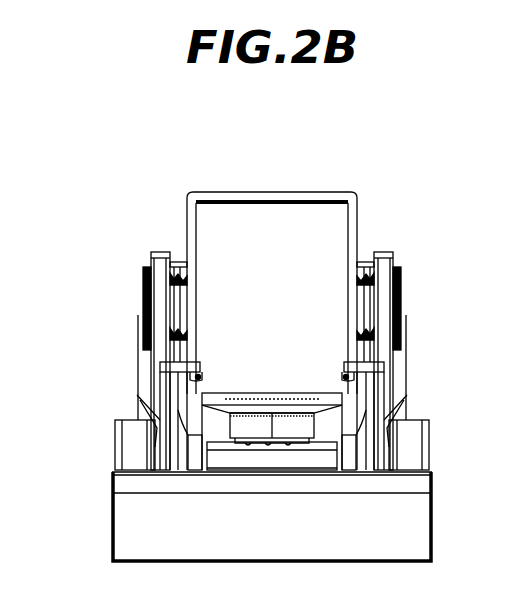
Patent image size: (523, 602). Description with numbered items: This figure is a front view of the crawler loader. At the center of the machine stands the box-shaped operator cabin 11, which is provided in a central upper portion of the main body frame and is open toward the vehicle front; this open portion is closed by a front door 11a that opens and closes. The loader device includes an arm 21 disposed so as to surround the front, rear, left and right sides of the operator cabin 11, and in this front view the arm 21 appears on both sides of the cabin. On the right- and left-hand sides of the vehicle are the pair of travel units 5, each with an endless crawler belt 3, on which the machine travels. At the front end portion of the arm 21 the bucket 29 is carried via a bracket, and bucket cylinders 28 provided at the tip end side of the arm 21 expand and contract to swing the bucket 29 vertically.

The operator cabin 11 is at (270, 198).
The front door 11a is at (290, 305).
The arm 21 is at (397, 232).
The travel unit 5 is at (113, 421).
The endless crawler belt 3 is at (120, 447).
The bucket cylinder 28 is at (193, 462).
The bucket 29 is at (127, 527).